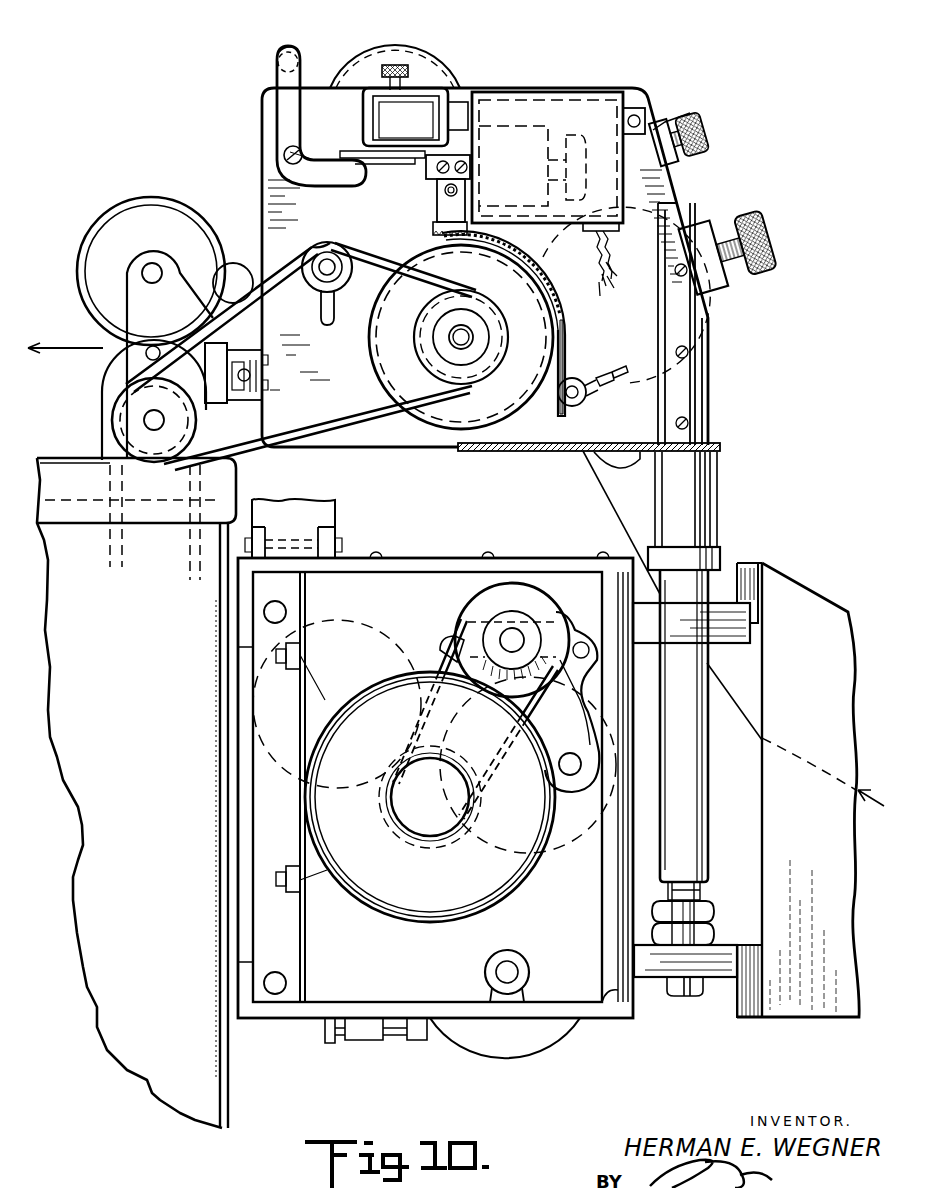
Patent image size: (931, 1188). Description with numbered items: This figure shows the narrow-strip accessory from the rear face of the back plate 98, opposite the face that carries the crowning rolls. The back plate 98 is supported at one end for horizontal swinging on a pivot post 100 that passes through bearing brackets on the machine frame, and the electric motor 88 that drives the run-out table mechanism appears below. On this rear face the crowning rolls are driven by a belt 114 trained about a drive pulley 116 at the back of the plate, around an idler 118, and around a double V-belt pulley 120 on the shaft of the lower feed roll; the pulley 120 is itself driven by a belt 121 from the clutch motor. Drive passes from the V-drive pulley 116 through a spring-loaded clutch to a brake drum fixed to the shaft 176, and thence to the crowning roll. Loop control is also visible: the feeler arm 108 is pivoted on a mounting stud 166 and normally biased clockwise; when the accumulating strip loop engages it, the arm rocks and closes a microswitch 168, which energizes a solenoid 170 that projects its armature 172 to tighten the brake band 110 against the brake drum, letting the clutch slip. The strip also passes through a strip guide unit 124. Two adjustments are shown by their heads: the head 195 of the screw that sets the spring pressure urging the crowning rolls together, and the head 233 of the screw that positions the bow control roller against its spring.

The electric motor 88 is at (498, 858).
The back plate 98 is at (262, 118).
The pivot post 100 is at (690, 782).
The feeler arm 108 is at (283, 49).
The brake band 110 is at (566, 316).
The belt 114 is at (272, 275).
The drive pulley 116 is at (470, 383).
The idler 118 is at (343, 276).
The double V-belt pulley 120 is at (131, 405).
The belt 121 is at (198, 326).
The strip guide unit 124 is at (267, 270).
The mounting stud 166 is at (276, 160).
The microswitch 168 is at (405, 120).
The solenoid 170 is at (530, 133).
The armature 172 is at (428, 170).
The shaft 176 is at (456, 337).
The head 195 is at (766, 226).
The head 233 is at (708, 136).